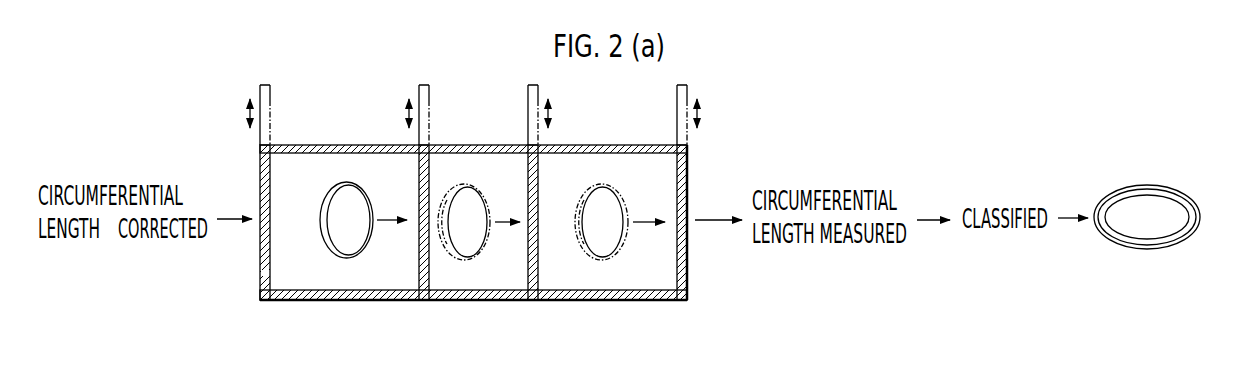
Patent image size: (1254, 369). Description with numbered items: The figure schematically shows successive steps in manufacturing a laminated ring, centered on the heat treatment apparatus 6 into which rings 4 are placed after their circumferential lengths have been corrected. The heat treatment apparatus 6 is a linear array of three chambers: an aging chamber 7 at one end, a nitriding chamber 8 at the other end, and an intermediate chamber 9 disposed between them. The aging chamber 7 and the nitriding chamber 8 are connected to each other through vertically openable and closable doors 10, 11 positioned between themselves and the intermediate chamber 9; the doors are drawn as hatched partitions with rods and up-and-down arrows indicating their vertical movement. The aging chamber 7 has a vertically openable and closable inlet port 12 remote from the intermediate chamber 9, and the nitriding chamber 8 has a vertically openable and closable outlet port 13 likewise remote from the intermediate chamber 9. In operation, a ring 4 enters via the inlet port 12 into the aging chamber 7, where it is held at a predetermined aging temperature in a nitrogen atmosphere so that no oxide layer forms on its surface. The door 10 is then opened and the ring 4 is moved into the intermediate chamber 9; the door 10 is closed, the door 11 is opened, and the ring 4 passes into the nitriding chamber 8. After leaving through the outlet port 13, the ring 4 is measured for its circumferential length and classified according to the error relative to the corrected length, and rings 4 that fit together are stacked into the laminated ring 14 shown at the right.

The ring 4 is at (350, 258).
The heat treatment apparatus 6 is at (452, 95).
The aging chamber 7 is at (352, 172).
The nitriding chamber 8 is at (605, 168).
The intermediate chamber 9 is at (483, 170).
The door 10 is at (430, 168).
The door 11 is at (538, 182).
The inlet port 12 is at (260, 252).
The outlet port 13 is at (688, 248).
The laminated ring 14 is at (1150, 180).